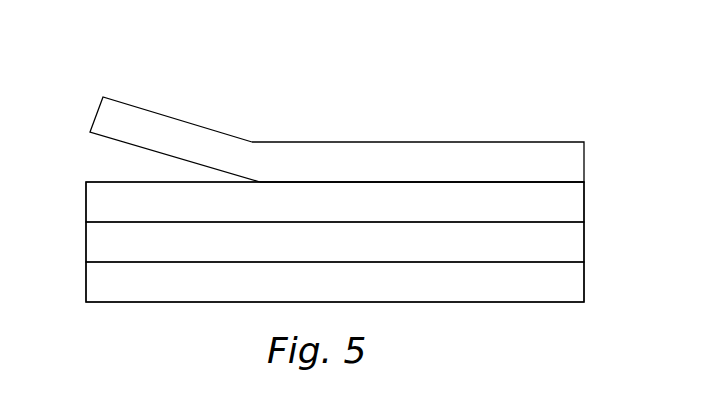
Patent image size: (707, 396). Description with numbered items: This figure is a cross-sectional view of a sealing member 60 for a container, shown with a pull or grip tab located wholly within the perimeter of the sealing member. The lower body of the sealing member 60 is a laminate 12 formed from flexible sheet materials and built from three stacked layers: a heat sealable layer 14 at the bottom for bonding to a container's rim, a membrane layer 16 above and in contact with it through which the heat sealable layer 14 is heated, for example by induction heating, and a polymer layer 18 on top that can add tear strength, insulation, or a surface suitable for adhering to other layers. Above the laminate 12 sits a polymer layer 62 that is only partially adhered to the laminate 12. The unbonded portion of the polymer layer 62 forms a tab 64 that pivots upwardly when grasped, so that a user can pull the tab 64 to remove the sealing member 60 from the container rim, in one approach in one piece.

The laminate 12 is at (55, 182).
The heat sealable layer 14 is at (584, 283).
The membrane layer 16 is at (584, 243).
The polymer layer 18 is at (584, 203).
The sealing member 60 is at (369, 106).
The polymer layer 62 is at (584, 163).
The tab 64 is at (168, 117).